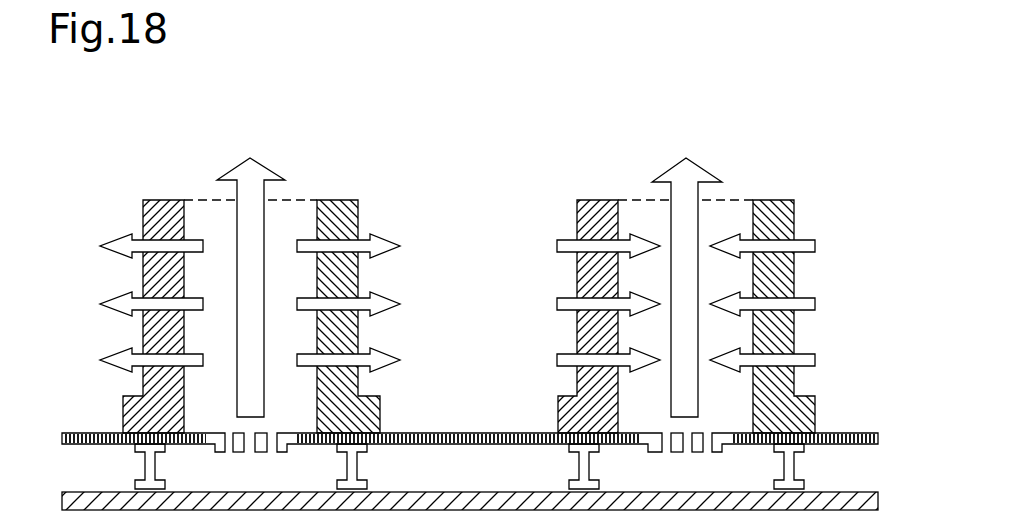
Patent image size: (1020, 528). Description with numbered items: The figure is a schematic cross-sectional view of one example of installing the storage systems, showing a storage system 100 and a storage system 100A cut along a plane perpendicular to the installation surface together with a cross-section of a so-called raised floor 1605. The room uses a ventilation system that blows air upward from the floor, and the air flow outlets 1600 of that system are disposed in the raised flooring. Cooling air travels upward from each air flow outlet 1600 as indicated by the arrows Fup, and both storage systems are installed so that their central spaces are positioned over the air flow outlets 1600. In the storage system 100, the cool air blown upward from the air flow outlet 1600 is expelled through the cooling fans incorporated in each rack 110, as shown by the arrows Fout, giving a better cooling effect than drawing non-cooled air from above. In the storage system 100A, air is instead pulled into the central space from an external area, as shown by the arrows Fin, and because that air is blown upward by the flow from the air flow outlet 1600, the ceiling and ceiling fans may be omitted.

The storage system 100 is at (195, 147).
The storage system 100A is at (640, 147).
The rack 110 is at (322, 199).
The air flow outlet 1600 is at (253, 455).
The raised floor 1605 is at (452, 432).
The arrows Fup is at (256, 176).
The arrows Fout is at (125, 239).
The arrows Fin is at (568, 239).